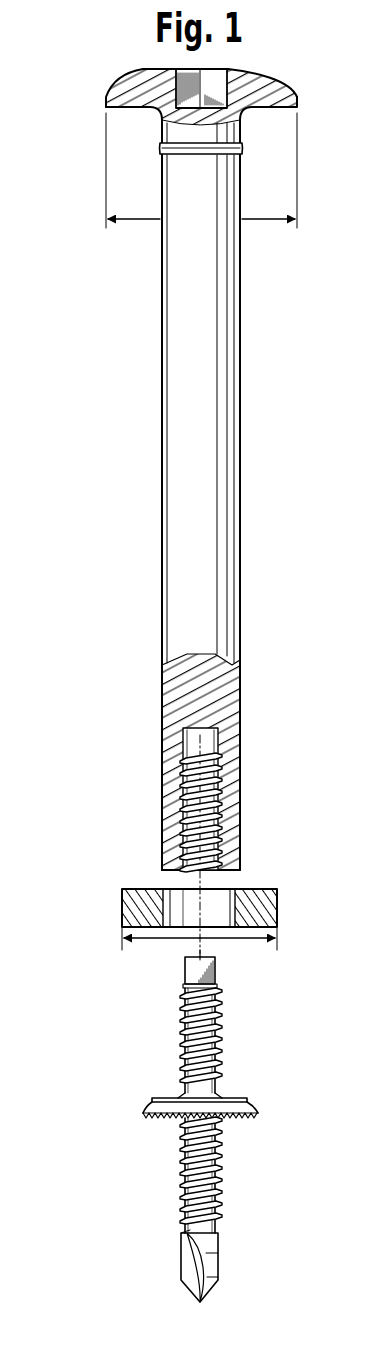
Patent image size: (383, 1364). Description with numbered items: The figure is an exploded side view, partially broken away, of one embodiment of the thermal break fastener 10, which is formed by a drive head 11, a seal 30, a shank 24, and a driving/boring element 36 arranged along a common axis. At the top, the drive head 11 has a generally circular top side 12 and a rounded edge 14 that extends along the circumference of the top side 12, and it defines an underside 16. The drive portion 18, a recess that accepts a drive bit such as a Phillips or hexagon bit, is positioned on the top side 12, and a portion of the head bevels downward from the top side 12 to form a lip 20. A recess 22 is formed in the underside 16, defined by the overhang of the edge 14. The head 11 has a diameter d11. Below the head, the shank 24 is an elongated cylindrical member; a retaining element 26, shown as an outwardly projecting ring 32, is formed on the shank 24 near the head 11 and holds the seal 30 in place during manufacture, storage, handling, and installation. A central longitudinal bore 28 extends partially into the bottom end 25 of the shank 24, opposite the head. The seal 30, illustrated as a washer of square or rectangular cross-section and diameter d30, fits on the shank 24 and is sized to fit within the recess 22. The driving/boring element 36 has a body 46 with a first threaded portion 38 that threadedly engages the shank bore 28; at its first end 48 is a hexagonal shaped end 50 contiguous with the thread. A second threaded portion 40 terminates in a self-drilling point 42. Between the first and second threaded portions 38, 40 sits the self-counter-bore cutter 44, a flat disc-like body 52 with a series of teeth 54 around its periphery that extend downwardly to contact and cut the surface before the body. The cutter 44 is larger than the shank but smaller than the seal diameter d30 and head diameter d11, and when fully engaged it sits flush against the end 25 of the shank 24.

The thermal break fastener 10 is at (88, 46).
The drive head 11 is at (198, 460).
The top side 12 is at (238, 70).
The rounded edge 14 is at (286, 79).
The underside 16 is at (112, 108).
The drive portion 18 is at (190, 67).
The lip 20 is at (276, 110).
The recess 22 is at (242, 135).
The shank 24 is at (160, 352).
The end of the shank 25 is at (239, 874).
The retaining element 26 is at (174, 157).
The central longitudinal bore 28 is at (224, 769).
The seal 30 is at (132, 884).
The outwardly projecting ring 32 is at (160, 144).
The driving/boring element 36 is at (212, 1126).
The first threaded portion 38 is at (178, 1027).
The second threaded portion 40 is at (178, 1180).
The self-drilling point 42 is at (206, 1278).
The self-counter-bore cutter 44 is at (221, 1103).
The body 46 is at (238, 1188).
The first end 48 is at (196, 952).
The hexagonal shaped end 50 is at (184, 974).
The disc-like body 52 is at (232, 1098).
The teeth 54 is at (246, 1117).
The diameter of the head d11 is at (258, 222).
The diameter of the seal d30 is at (255, 942).